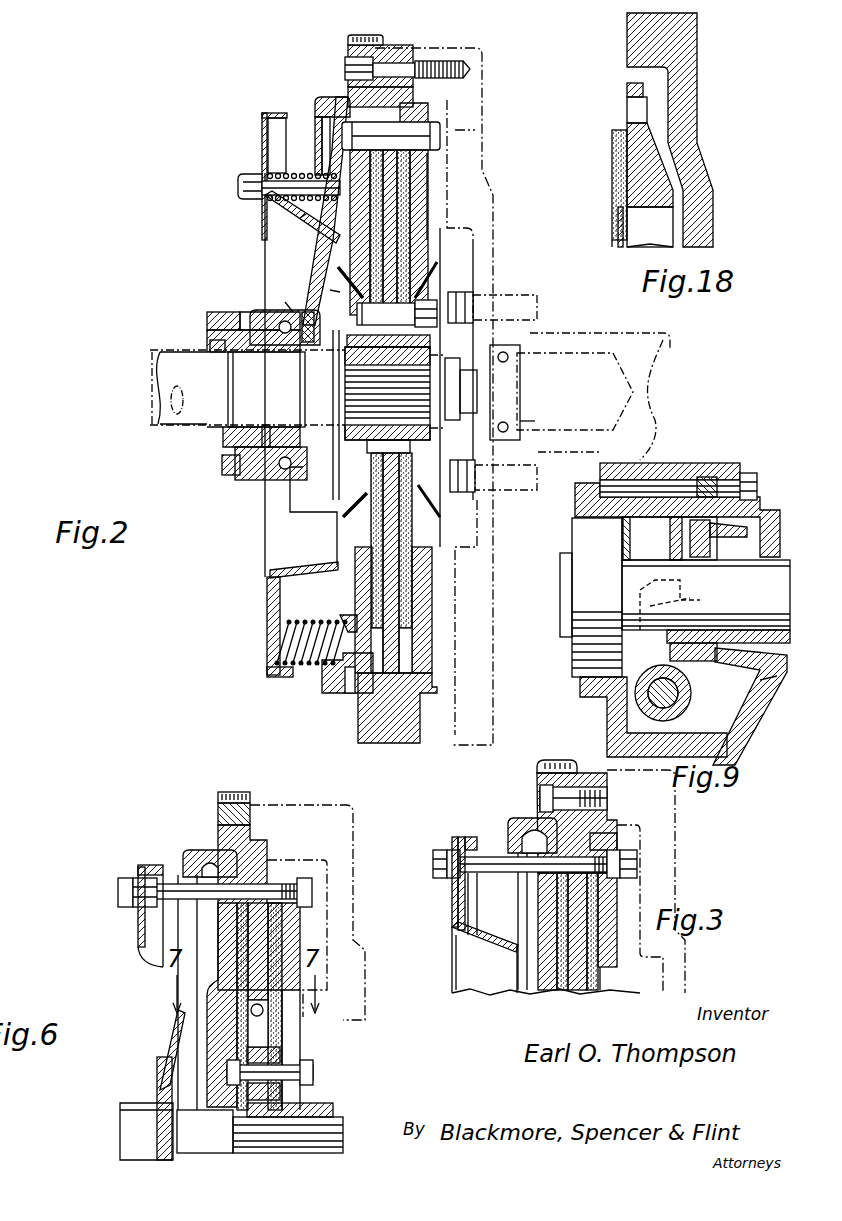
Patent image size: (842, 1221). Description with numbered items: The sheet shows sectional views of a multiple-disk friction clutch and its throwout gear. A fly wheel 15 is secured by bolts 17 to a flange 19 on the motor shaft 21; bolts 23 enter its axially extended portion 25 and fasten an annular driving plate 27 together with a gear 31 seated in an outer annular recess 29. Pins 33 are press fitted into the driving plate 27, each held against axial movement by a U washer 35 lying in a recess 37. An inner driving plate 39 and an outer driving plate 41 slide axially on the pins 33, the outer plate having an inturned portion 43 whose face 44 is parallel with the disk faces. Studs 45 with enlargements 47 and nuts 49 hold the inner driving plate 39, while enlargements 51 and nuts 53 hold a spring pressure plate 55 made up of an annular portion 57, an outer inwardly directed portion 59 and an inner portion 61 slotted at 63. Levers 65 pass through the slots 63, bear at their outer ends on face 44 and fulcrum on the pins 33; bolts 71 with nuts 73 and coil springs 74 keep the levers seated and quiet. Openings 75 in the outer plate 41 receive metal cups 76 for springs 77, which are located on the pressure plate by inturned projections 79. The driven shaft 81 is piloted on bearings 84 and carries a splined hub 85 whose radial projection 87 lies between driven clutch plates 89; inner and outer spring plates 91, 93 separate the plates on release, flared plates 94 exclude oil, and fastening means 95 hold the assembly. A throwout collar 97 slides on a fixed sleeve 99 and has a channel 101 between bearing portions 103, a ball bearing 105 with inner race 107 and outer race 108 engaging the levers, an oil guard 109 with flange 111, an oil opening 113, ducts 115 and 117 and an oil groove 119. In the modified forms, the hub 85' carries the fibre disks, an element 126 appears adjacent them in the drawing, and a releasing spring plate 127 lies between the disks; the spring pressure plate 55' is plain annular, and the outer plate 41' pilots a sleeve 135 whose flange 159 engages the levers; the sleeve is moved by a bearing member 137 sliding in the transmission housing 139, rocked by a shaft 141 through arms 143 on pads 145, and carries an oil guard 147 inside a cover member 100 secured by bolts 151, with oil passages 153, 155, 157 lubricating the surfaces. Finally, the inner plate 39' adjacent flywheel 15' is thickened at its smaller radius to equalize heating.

In FIG. 2, the fly wheel 15 is at (444, 396).
In FIG. 6, the fly wheel 15 is at (307, 892).
In FIG. 3, the fly wheel 15 is at (666, 881).
In FIG. 18, the flywheel 15' is at (688, 130).
In FIG. 2, the bolts 17 is at (500, 300).
In FIG. 2, the flange 19 is at (540, 334).
In FIG. 2, the motor shaft 21 is at (638, 345).
In FIG. 2, the bolts 23 is at (425, 62).
In FIG. 2, the axially extended portion 25 is at (468, 58).
In FIG. 2, the annular driving plate 27 is at (338, 95).
In FIG. 3, the annular driving plate 27 is at (579, 985).
In FIG. 2, the outer annular recess 29 is at (392, 48).
In FIG. 2, the gear 31 is at (348, 42).
In FIG. 6, the gear 31 is at (238, 795).
In FIG. 3, the gear 31 is at (548, 760).
In FIG. 2, the pins 33 is at (430, 120).
In FIG. 2, the U washer 35 is at (318, 115).
In FIG. 2, the recess 37 is at (391, 135).
In FIG. 2, the inner driving plate 39 is at (444, 411).
In FIG. 3, the inner driving plate 39 is at (616, 931).
In FIG. 18, the inner plate 39' is at (680, 165).
In FIG. 2, the outer driving plate 41 is at (322, 411).
In FIG. 3, the outer driving plate 41 is at (529, 904).
In FIG. 6, the outer plate 41' is at (198, 967).
In FIG. 2, the inturned portion 43 is at (322, 100).
In FIG. 2, the face 44 is at (315, 128).
In FIG. 3, the studs or tie rods 45 is at (490, 858).
In FIG. 3, the enlargements 47 is at (588, 842).
In FIG. 3, the nuts 49 is at (630, 855).
In FIG. 3, the enlargements 51 is at (462, 840).
In FIG. 3, the nuts 53 is at (436, 856).
In FIG. 2, the spring pressure plate 55 is at (279, 619).
In FIG. 3, the spring pressure plate 55 is at (471, 931).
In FIG. 6, the spring pressure plate 55' is at (163, 908).
In FIG. 2, the annular portion 57 is at (262, 120).
In FIG. 3, the annular portion 57 is at (450, 895).
In FIG. 2, the outer peripheral inwardly directed portion 59 is at (268, 135).
In FIG. 3, the outer peripheral inwardly directed portion 59 is at (476, 877).
In FIG. 2, the inner portion 61 is at (278, 215).
In FIG. 3, the inner portion 61 is at (480, 940).
In FIG. 2, the slots 63 is at (304, 218).
In FIG. 2, the levers 65 is at (330, 268).
In FIG. 2, the bolts 71 is at (305, 180).
In FIG. 2, the nuts 73 is at (246, 178).
In FIG. 2, the coil springs 74 is at (282, 208).
In FIG. 2, the openings 75 is at (340, 620).
In FIG. 2, the metal cups 76 is at (358, 690).
In FIG. 2, the springs 77 is at (308, 668).
In FIG. 2, the inturned projections 79 is at (270, 640).
In FIG. 2, the driven shaft 81 is at (172, 430).
In FIG. 2, the bearings 84 is at (525, 421).
In FIG. 2, the hub 85 is at (411, 392).
In FIG. 6, the hub 85' is at (305, 1104).
In FIG. 2, the annular radial projection 87 is at (372, 343).
In FIG. 2, the driven clutch plates 89 is at (412, 250).
In FIG. 2, the inner spring plate 91 is at (388, 276).
In FIG. 2, the outer spring plate 93 is at (373, 258).
In FIG. 2, the flared plates 94 is at (428, 270).
In FIG. 2, the fastening means 95 is at (372, 300).
In FIG. 6, the fastening means 95 is at (313, 1075).
In FIG. 2, the throwout collar 97 is at (225, 336).
In FIG. 2, the sleeve 99 is at (185, 350).
In FIG. 9, the cover member 100 is at (760, 683).
In FIG. 2, the channel portion 101 is at (266, 389).
In FIG. 2, the bearing portions 103 is at (225, 445).
In FIG. 2, the ball bearing 105 is at (287, 340).
In FIG. 2, the inner race 107 is at (310, 325).
In FIG. 2, the outer race 108 is at (278, 296).
In FIG. 2, the oil guard 109 is at (292, 508).
In FIG. 2, the flange 111 is at (262, 482).
In FIG. 2, the opening 113 is at (215, 322).
In FIG. 2, the duct 115 is at (215, 350).
In FIG. 2, the duct 117 is at (264, 440).
In FIG. 2, the oil groove 119 is at (237, 476).
In FIG. 6, the hub plate 126 is at (285, 1049).
In FIG. 6, the releasing spring plate 127 is at (263, 1013).
In FIG. 9, the sleeve 135 is at (755, 618).
In FIG. 6, the sleeve 135 is at (212, 1142).
In FIG. 9, the clutch releasing bearing member 137 is at (671, 530).
In FIG. 9, the transmission housing 139 is at (684, 750).
In FIG. 9, the shaft 141 is at (682, 696).
In FIG. 9, the arms 143 is at (686, 590).
In FIG. 9, the pads 145 is at (692, 612).
In FIG. 9, the oil guard 147 is at (737, 692).
In FIG. 9, the bolts 151 is at (749, 473).
In FIG. 9, the oil hole or passage 153 is at (662, 490).
In FIG. 9, the oil hole or passage 155 is at (624, 527).
In FIG. 9, the oil hole or passage 157 is at (662, 540).
In FIG. 6, the flange 159 is at (157, 1082).